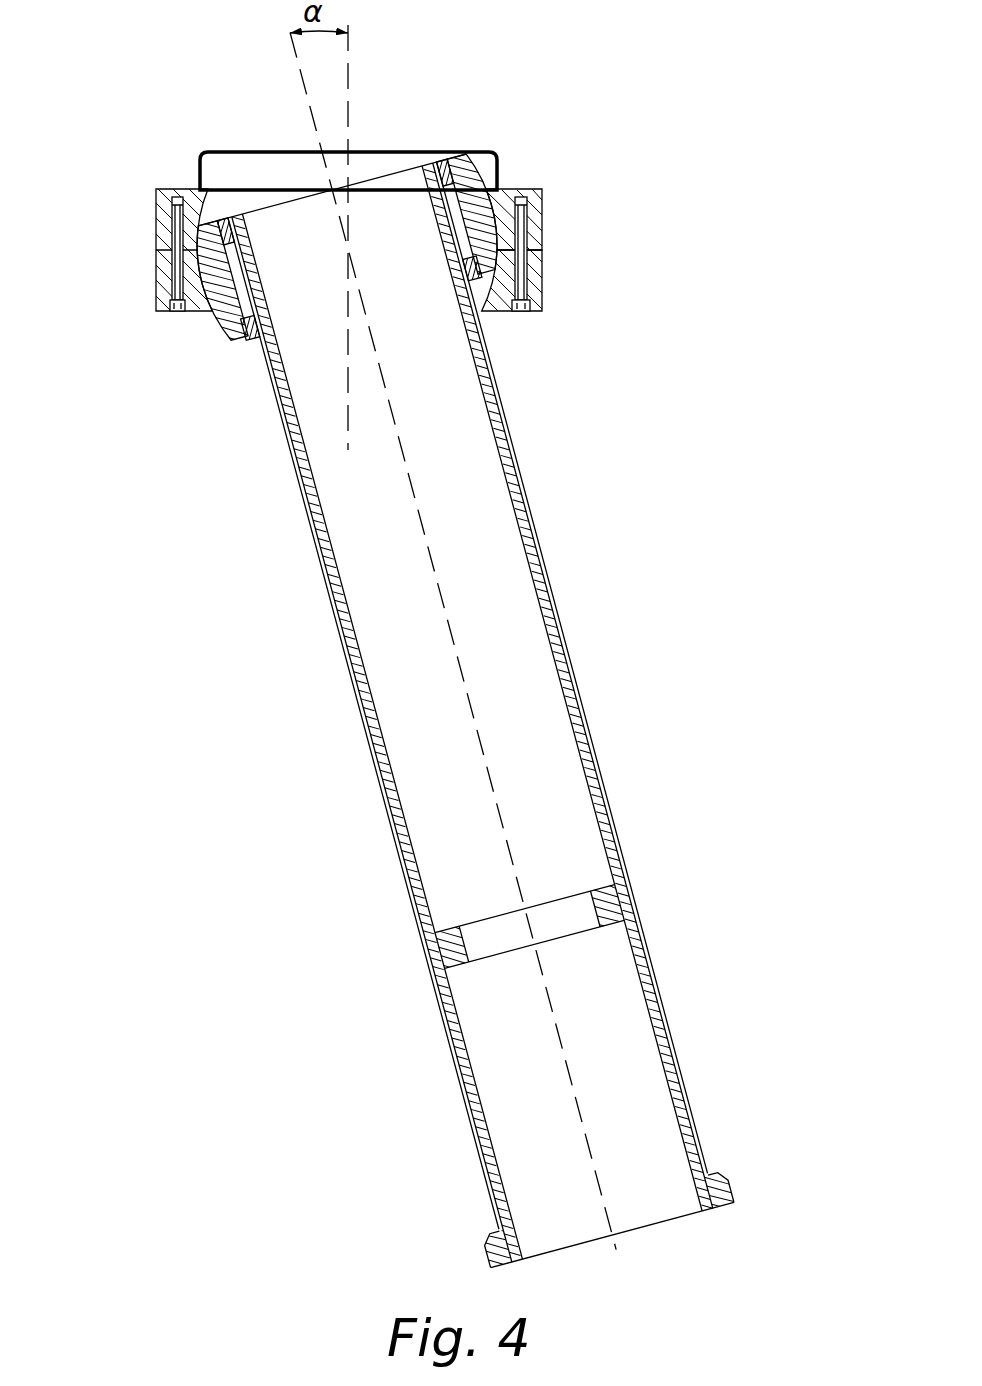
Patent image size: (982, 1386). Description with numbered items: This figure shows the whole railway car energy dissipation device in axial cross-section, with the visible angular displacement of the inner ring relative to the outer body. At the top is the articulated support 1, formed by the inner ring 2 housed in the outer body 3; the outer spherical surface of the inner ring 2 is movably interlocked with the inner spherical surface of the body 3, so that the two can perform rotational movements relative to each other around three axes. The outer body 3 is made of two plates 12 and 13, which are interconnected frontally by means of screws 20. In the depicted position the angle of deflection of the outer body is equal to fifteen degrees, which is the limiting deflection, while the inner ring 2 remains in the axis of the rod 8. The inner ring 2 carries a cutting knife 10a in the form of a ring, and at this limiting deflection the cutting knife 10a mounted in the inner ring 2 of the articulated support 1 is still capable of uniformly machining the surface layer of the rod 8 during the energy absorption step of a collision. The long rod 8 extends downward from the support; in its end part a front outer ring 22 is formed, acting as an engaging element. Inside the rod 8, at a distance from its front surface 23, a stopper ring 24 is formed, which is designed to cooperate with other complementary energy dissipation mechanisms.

The articulated support 1 is at (203, 323).
The inner ring 2 is at (235, 287).
The outer body 3 is at (142, 247).
The rod 8 is at (343, 585).
The cutting knife 10a is at (252, 326).
The plate 12 is at (537, 283).
The plate 13 is at (537, 213).
The screws 20 is at (528, 313).
The front outer ring 22 is at (720, 1198).
The front surface 23 is at (692, 1218).
The stopper ring 24 is at (602, 903).